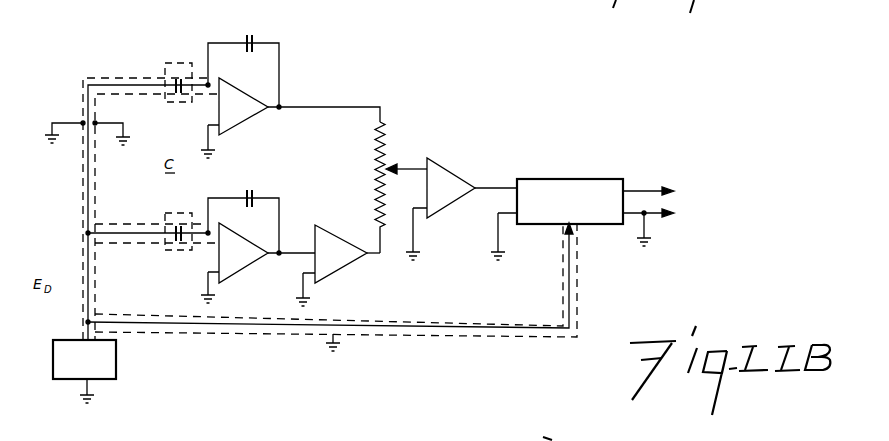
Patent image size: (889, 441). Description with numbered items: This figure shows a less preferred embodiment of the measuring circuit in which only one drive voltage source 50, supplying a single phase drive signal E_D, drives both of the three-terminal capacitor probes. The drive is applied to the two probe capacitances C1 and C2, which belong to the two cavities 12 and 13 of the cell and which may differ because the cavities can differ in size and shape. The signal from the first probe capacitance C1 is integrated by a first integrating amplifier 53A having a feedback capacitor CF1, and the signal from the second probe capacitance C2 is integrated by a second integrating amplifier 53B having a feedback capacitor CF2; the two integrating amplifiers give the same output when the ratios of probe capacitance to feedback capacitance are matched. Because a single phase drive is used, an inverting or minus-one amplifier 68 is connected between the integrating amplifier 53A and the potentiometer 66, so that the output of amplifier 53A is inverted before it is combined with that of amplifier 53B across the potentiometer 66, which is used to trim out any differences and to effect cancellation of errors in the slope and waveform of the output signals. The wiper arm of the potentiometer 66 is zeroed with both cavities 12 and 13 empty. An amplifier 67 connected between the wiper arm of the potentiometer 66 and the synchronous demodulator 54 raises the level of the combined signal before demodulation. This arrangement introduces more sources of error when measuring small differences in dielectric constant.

The cavity 12 is at (172, 79).
The cavity 13 is at (180, 230).
The source of input signals 50 is at (116, 368).
The integrating amplifier 53A is at (290, 85).
The integrating amplifier 53B is at (258, 237).
The synchronous demodulator 54 is at (603, 161).
The potentiometer 66 is at (380, 152).
The amplifier 67 is at (462, 183).
The inverting amplifier 68 is at (340, 262).
The capacity of first probe C1 is at (178, 63).
The capacity of second probe C2 is at (173, 213).
The feedback capacitor CF1 is at (250, 97).
The feedback capacitor CF2 is at (244, 246).